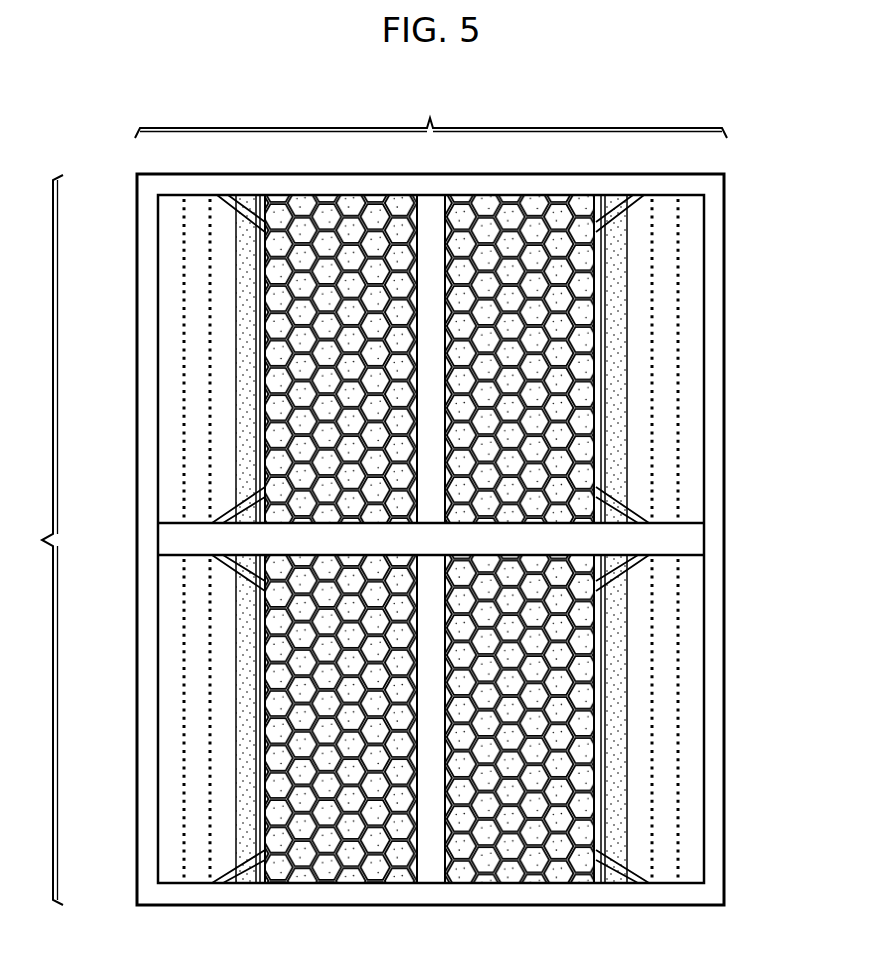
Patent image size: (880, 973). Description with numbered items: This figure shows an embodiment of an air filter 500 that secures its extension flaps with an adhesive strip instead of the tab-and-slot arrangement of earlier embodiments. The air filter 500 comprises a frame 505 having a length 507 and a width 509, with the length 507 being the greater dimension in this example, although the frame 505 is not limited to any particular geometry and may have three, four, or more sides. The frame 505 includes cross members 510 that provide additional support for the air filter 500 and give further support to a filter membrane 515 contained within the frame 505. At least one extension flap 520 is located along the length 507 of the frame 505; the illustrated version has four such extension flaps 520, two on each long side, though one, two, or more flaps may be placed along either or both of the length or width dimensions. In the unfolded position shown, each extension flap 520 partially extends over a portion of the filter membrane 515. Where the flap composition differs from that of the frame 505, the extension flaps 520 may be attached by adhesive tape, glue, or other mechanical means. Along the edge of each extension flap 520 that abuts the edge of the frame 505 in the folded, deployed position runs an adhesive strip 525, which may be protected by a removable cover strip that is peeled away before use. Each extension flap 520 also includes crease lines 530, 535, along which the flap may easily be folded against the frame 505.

The air filter 500 is at (160, 62).
The frame 505 is at (724, 213).
The length 507 is at (32, 540).
The width 509 is at (431, 112).
The cross members 510 is at (706, 539).
The filter membrane 515 is at (532, 218).
The extension flap 520 is at (167, 328).
The adhesive strip 525 is at (245, 257).
The crease line 530 is at (185, 445).
The crease line 535 is at (210, 388).